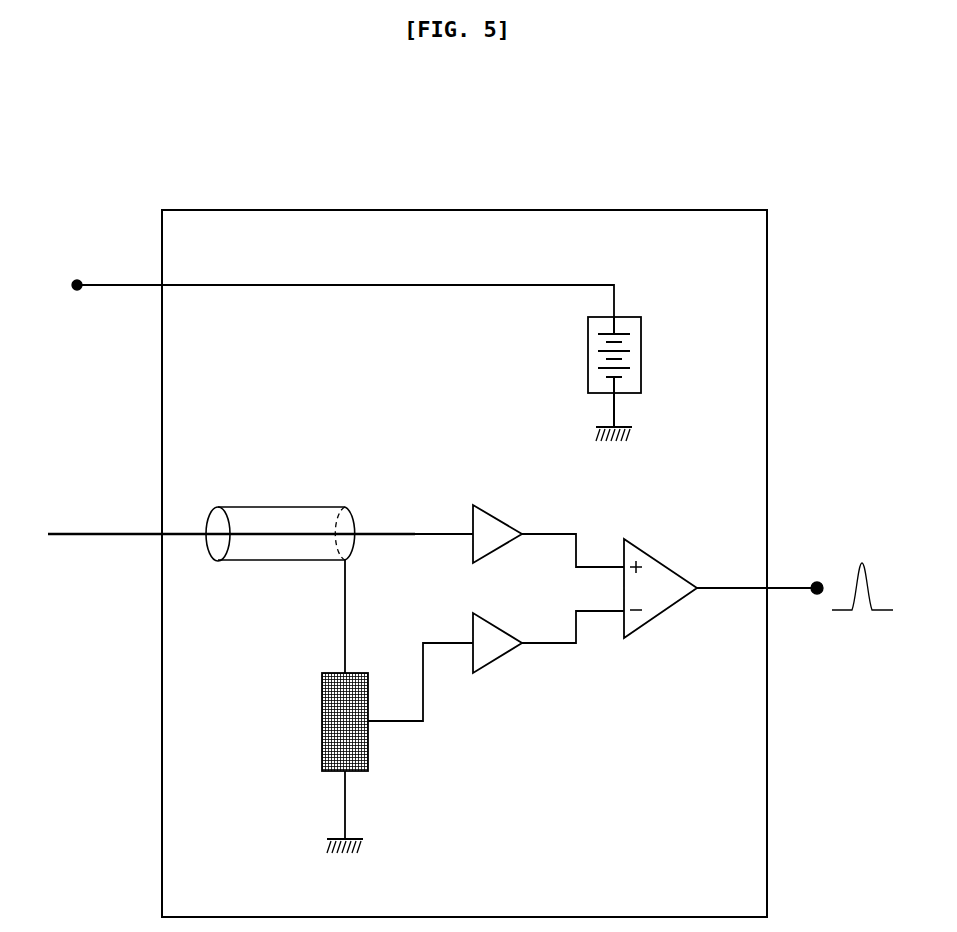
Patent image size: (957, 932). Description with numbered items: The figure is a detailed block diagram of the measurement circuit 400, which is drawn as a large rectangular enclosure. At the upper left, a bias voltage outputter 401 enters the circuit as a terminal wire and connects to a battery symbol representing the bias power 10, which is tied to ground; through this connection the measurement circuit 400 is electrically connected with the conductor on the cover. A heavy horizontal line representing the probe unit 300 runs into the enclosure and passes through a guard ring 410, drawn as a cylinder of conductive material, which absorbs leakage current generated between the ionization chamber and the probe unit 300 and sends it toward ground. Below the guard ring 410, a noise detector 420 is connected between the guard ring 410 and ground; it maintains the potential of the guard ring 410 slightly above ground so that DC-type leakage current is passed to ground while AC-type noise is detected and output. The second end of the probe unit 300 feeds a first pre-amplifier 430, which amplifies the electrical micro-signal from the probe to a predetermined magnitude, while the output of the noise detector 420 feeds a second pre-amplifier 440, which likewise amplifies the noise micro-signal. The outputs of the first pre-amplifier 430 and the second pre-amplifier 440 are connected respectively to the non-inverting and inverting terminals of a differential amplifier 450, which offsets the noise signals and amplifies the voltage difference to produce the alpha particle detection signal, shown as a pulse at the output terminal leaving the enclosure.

The measurement circuit 400 is at (462, 210).
The bias voltage outputter 401 is at (77, 280).
The bias power 10 is at (641, 355).
The probe unit 300 is at (117, 536).
The guard ring 410 is at (280, 507).
The noise detector 420 is at (322, 718).
The first pre-amplifier 430 is at (500, 517).
The second pre-amplifier 440 is at (500, 657).
The differential amplifier 450 is at (665, 560).